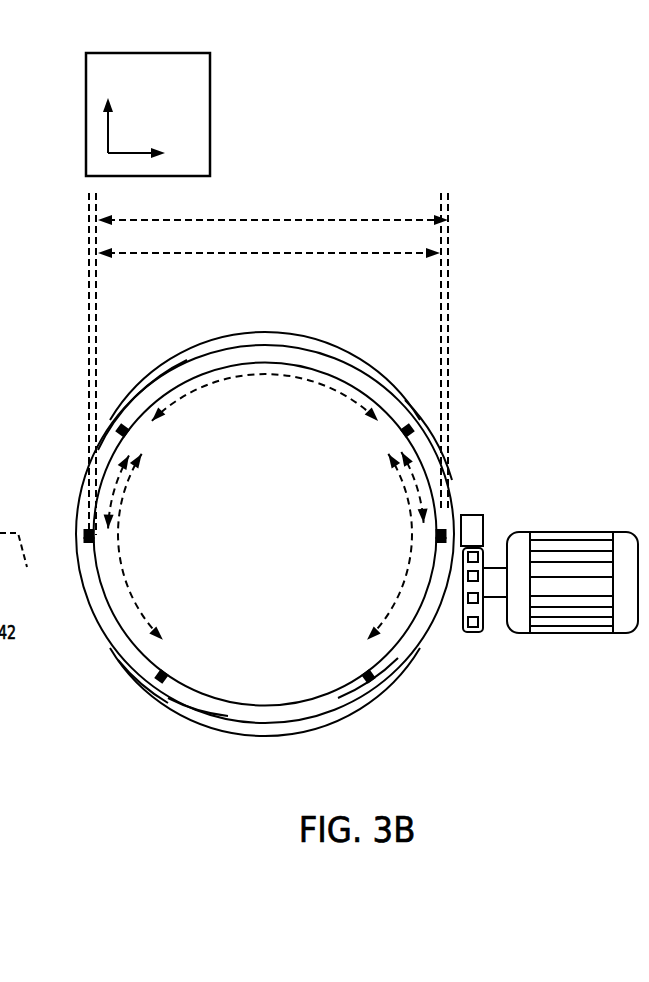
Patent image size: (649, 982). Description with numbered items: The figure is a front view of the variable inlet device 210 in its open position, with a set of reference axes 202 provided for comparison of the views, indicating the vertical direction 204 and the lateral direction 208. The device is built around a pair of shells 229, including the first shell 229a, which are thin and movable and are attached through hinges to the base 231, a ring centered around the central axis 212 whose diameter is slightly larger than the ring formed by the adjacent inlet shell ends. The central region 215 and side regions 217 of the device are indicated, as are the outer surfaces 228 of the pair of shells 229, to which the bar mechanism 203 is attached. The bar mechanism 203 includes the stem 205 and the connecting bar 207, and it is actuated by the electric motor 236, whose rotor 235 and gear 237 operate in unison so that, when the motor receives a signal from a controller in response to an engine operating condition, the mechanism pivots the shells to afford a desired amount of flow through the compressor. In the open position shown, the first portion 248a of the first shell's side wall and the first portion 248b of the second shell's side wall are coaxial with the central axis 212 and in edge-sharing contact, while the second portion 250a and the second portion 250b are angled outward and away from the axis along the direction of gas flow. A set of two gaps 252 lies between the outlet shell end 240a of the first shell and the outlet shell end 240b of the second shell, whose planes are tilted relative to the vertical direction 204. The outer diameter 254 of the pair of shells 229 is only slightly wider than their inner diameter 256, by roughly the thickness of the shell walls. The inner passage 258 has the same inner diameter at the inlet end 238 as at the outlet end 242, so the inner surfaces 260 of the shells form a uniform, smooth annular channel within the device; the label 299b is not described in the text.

The set of reference axes 202 is at (185, 101).
The vertical direction 204 is at (110, 120).
The lateral direction 208 is at (138, 153).
The bar mechanism 203 is at (483, 500).
The stem 205 is at (483, 523).
The connecting bar 207 is at (450, 470).
The variable inlet device 210 is at (452, 305).
The central axis 212 is at (20, 565).
The central region 215 is at (267, 376).
The side regions 217 is at (113, 496).
The outer surfaces 228 is at (323, 357).
The pair of shells 229 is at (200, 335).
The first shell 229a is at (183, 367).
The base 231 is at (146, 683).
The rotor 235 is at (600, 533).
The electric motor 236 is at (549, 560).
The gear 237 is at (478, 632).
The inlet end 238 is at (120, 377).
The outlet shell end 240a is at (275, 358).
The outlet shell end 240b is at (307, 707).
The outlet end 242 is at (242, 582).
The first portion 248a is at (90, 535).
The first portion 248b is at (92, 538).
The second portion 250a is at (115, 452).
The second portion 250b is at (127, 637).
The gaps 252 is at (135, 595).
The outer diameter 254 is at (252, 218).
The inner diameter 256 is at (380, 255).
The inner passage 258 is at (255, 541).
The inner surfaces 260 is at (203, 692).
The outer wall portion 299b is at (363, 695).